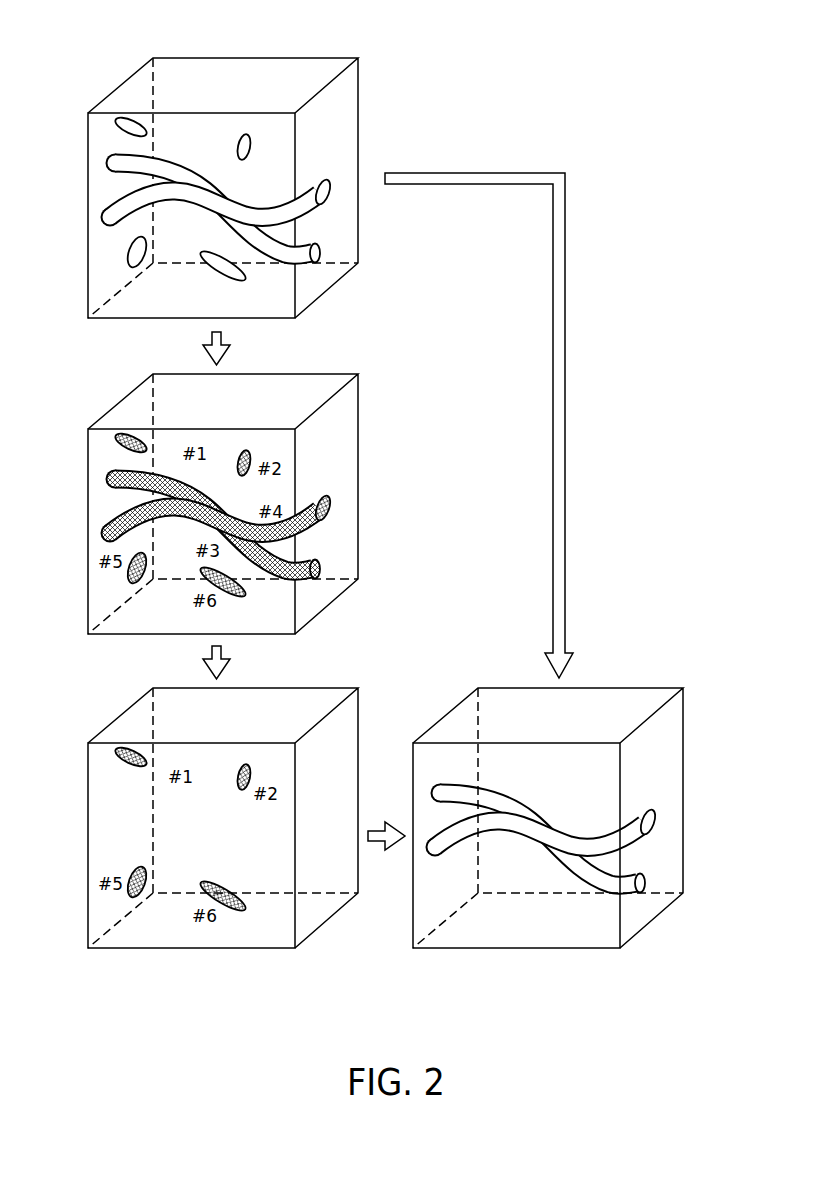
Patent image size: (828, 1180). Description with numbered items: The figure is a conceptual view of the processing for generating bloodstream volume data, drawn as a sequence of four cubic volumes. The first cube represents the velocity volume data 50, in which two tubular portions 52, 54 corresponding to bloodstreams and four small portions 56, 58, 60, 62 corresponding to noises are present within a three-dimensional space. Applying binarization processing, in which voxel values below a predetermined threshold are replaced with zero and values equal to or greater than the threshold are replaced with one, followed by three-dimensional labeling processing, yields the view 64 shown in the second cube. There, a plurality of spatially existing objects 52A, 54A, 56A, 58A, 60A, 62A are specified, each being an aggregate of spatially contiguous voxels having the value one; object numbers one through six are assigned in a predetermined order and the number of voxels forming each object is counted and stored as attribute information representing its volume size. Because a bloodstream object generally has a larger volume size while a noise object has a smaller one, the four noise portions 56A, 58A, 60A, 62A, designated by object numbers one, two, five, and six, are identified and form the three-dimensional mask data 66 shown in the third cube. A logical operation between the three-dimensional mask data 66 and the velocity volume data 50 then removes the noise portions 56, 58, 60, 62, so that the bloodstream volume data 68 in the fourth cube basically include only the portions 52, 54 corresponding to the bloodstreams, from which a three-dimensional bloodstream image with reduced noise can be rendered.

The velocity volume data 50 is at (373, 118).
The portion corresponding to bloodstream 52 is at (310, 190).
The portion corresponding to bloodstream 54 is at (305, 263).
The portion corresponding to noise 56 is at (147, 128).
The portion corresponding to noise 58 is at (240, 136).
The portion corresponding to noise 60 is at (130, 253).
The portion corresponding to noise 62 is at (240, 285).
The binarized and labeled volume data view 64 is at (365, 466).
The labeled object 52A is at (310, 507).
The labeled object 54A is at (307, 583).
The labeled noise object 56A is at (147, 440).
The labeled noise object 58A is at (240, 450).
The labeled noise object 60A is at (127, 573).
The labeled noise object 62A is at (240, 600).
The three-dimensional mask data 66 is at (363, 737).
The bloodstream volume data 68 is at (688, 737).